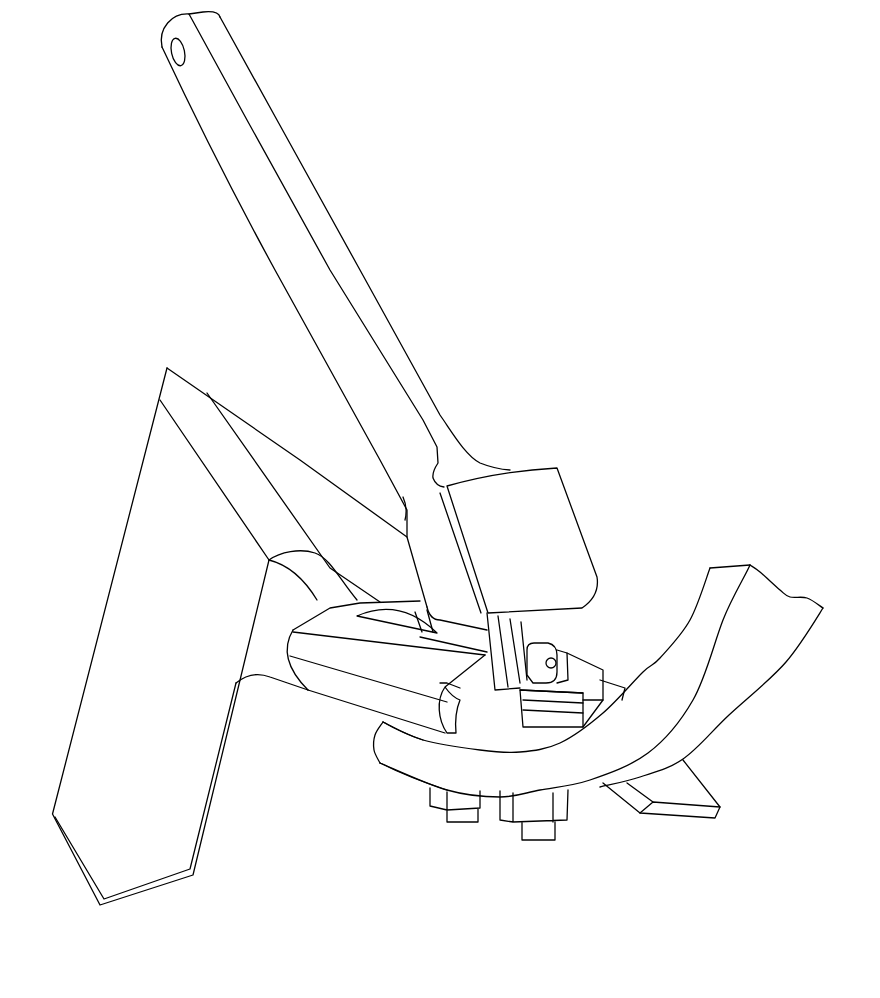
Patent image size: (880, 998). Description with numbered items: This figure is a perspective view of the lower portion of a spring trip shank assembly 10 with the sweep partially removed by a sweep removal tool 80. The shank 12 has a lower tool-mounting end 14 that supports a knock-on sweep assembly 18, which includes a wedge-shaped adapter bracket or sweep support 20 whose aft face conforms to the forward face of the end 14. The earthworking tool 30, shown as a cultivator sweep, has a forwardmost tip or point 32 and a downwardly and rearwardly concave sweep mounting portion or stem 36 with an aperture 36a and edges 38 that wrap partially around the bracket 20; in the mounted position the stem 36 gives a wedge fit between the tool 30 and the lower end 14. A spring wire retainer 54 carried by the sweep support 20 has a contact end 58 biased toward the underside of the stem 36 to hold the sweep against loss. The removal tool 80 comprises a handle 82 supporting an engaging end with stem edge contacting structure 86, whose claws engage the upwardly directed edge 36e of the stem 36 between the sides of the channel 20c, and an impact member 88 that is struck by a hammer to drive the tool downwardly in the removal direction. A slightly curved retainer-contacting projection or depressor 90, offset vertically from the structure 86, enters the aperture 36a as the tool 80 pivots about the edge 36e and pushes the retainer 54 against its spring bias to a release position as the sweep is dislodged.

The spring trip shank assembly 10 is at (652, 583).
The shank 12 is at (737, 713).
The lower tool-mounting end 14 is at (390, 760).
The knock-on sweep assembly 18 is at (328, 423).
The sweep support 20 is at (610, 692).
The channel 20c is at (593, 702).
The earthworking tool 30 is at (115, 598).
The forwardmost tip or point 32 is at (165, 365).
The sweep mounting portion or stem 36 is at (323, 663).
The aperture 36a is at (400, 607).
The upwardly directed edge 36e is at (490, 735).
The edges 38 is at (604, 668).
The retainer 54 is at (545, 658).
The contact end 58 is at (567, 670).
The sweep removal tool 80 is at (484, 244).
The handle 82 is at (262, 228).
The stem edge contacting structure 86 is at (530, 632).
The impact member 88 is at (540, 487).
The retainer-contacting projection or depressor 90 is at (443, 605).